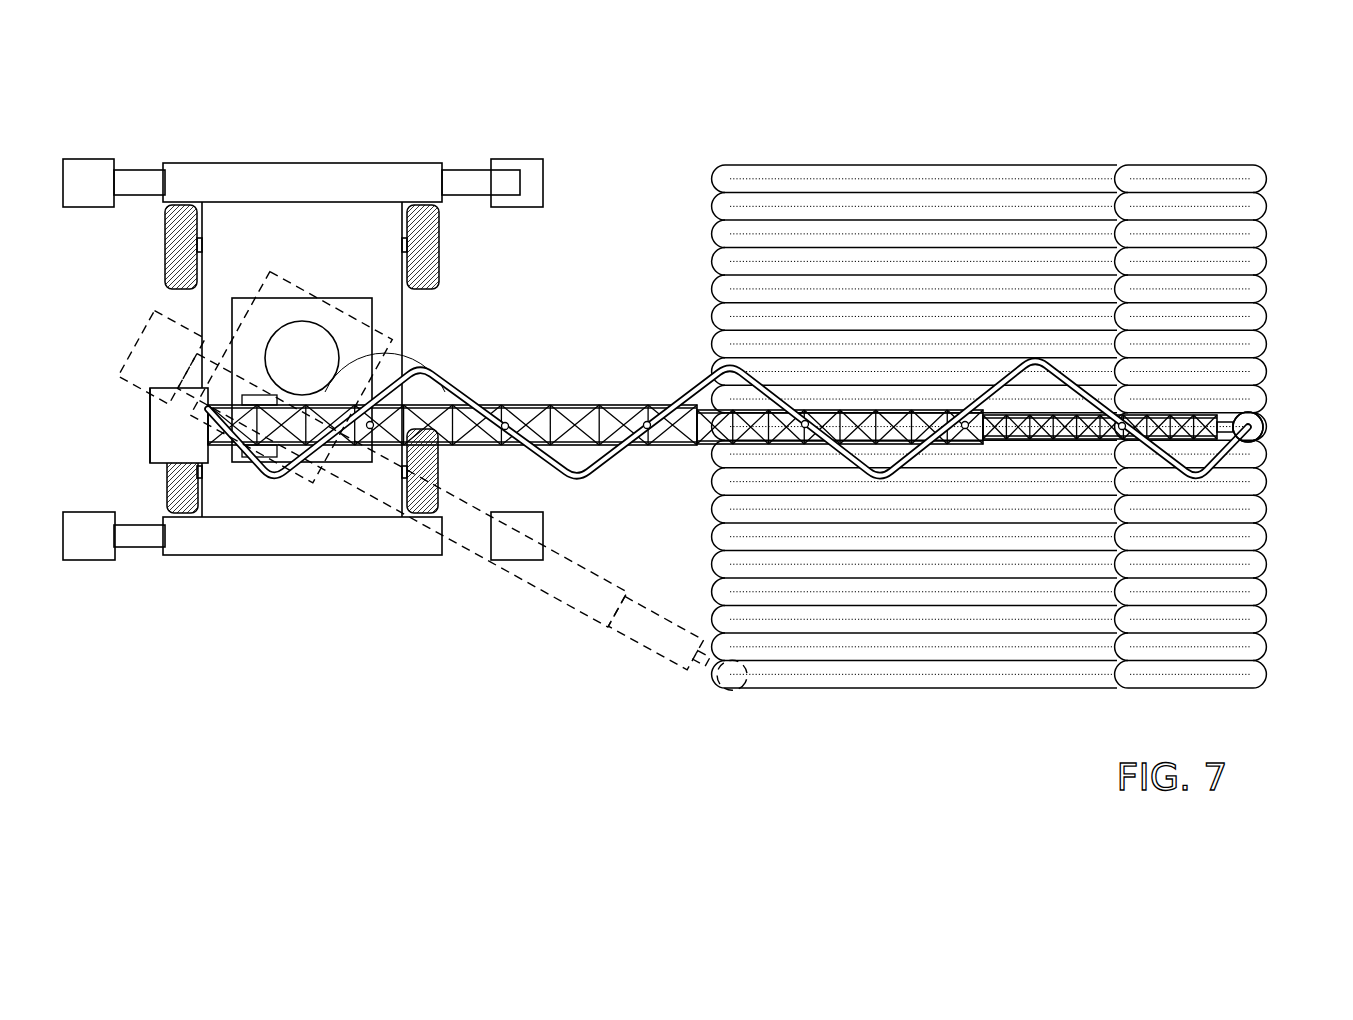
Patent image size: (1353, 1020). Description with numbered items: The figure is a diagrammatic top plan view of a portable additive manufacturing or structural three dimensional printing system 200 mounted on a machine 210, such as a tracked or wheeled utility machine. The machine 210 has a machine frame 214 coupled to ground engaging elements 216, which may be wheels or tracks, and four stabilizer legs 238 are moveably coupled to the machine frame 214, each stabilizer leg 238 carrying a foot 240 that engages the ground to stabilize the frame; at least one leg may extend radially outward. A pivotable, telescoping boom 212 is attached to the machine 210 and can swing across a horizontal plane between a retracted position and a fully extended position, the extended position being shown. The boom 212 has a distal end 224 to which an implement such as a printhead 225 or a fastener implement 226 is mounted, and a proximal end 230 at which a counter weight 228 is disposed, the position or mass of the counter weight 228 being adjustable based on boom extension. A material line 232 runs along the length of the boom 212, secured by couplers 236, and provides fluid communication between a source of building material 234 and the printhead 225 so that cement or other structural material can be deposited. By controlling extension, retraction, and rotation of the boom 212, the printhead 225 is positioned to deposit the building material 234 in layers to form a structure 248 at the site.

The printing system 200 is at (598, 252).
The machine 210 is at (183, 158).
The boom 212 is at (648, 455).
The machine frame 214 is at (320, 501).
The ground engaging element 216 is at (170, 490).
The distal end 224 is at (1272, 428).
The printhead 225 is at (1262, 413).
The fastener implement 226 is at (1230, 422).
The counter weight 228 is at (194, 441).
The proximal end 230 is at (140, 425).
The material line 232 is at (445, 376).
The source of building material 234 is at (1086, 165).
The coupler 236 is at (505, 418).
The stabilizer leg 238 is at (470, 170).
The foot 240 is at (538, 182).
The structure 248 is at (1262, 162).